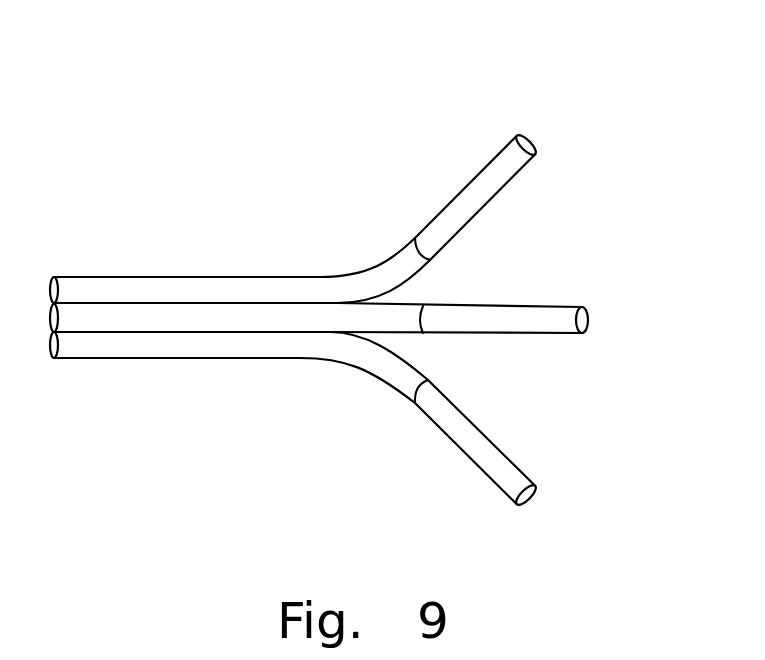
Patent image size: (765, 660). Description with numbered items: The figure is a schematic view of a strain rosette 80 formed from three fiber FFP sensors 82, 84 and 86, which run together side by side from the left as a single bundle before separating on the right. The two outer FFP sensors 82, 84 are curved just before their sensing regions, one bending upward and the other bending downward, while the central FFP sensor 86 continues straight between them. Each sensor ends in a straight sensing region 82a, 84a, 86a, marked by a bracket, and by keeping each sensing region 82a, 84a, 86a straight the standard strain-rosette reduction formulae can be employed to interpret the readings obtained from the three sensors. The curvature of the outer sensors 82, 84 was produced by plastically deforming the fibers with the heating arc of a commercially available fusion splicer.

The strain rosette 80 is at (270, 222).
The FFP sensor 82 is at (455, 142).
The sensing region 82a is at (483, 214).
The FFP sensor 84 is at (528, 455).
The sensing region 84a is at (457, 448).
The FFP sensor 86 is at (542, 292).
The sensing region 86a is at (501, 351).